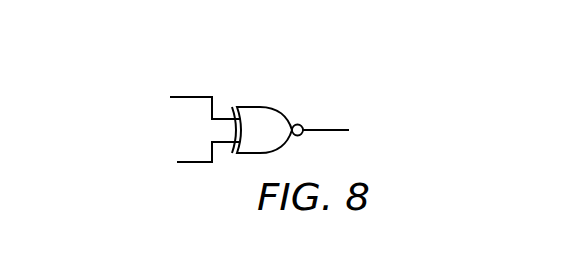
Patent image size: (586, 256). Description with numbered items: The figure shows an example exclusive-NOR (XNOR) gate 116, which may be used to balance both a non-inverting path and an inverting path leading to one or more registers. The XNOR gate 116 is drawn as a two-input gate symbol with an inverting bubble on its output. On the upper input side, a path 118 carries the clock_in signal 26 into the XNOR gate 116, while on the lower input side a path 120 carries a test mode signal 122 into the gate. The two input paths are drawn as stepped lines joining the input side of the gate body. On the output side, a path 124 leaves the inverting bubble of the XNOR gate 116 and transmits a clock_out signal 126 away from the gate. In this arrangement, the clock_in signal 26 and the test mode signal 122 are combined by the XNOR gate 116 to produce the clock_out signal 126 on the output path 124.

The clock_in signal 26 is at (122, 82).
The exclusive-NOR (XNOR) gate 116 is at (290, 62).
The path 118 is at (197, 97).
The path 120 is at (197, 165).
The test mode signal 122 is at (122, 177).
The path 124 is at (326, 129).
The clock_out signal 126 is at (392, 117).